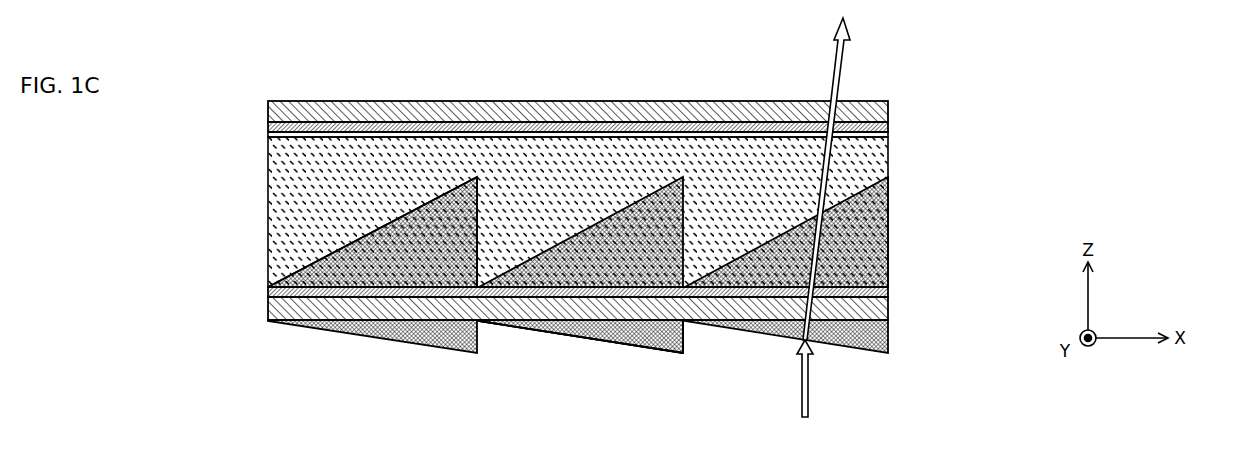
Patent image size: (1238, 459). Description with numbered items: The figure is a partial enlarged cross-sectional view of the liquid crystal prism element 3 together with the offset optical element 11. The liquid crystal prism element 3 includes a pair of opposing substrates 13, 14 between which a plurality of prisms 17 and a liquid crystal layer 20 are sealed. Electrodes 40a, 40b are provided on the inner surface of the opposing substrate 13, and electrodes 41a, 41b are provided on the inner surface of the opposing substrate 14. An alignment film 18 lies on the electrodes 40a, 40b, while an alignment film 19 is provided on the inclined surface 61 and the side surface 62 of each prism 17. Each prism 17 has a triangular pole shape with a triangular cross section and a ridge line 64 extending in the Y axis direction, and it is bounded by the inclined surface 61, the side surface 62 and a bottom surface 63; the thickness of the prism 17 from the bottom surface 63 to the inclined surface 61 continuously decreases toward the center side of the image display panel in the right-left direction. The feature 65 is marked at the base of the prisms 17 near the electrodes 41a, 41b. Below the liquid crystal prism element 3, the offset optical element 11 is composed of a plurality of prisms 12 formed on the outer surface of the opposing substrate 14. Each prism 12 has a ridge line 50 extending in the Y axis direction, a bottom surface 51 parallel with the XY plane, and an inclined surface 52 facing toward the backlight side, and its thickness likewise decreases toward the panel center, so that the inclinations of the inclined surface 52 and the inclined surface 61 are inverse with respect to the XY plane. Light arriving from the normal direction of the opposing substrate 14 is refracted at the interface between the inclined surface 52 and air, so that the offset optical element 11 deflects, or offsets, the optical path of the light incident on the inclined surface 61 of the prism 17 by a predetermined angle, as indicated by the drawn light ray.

The liquid crystal prism element 3 is at (221, 107).
The offset optical element 11 is at (627, 342).
The prisms 12 is at (982, 364).
The opposing substrate 13 is at (888, 105).
The opposing substrate 14 is at (888, 307).
The prisms 17 is at (888, 232).
The alignment film 18 is at (888, 138).
The alignment film 19 is at (617, 232).
The liquid crystal layer 20 is at (888, 159).
The electrode 40a is at (640, 118).
The electrode 40b is at (888, 126).
The electrode 41a is at (639, 299).
The electrode 41b is at (888, 292).
The ridge line 50 is at (683, 354).
The bottom surface 51 is at (558, 333).
The inclined surface 52 is at (602, 342).
The inclined surface 61 is at (384, 230).
The side surface 62 is at (475, 205).
The bottom surface 63 is at (357, 287).
The ridge line 64 is at (479, 176).
The prism base line 65 is at (268, 287).